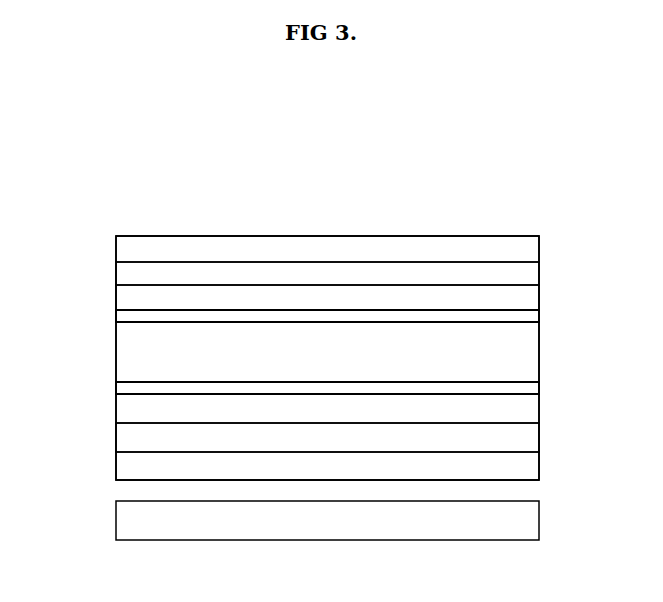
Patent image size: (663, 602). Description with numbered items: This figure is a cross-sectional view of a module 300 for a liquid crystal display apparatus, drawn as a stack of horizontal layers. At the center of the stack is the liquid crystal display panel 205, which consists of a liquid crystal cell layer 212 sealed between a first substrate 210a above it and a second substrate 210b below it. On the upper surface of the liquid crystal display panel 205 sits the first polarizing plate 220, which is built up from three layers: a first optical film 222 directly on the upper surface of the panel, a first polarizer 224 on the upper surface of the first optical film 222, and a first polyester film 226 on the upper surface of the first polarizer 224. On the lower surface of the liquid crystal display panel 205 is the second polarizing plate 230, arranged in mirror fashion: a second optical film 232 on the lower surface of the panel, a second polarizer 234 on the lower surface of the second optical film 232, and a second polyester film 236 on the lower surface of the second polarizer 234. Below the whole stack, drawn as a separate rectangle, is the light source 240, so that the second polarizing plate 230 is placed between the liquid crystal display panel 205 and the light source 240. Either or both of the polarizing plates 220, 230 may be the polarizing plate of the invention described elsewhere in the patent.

The module for a liquid crystal display apparatus 300 is at (527, 183).
The liquid crystal display panel 205 is at (545, 312).
The first substrate 210a is at (126, 318).
The second substrate 210b is at (126, 386).
The liquid crystal cell layer 212 is at (126, 354).
The first polarizing plate 220 is at (545, 236).
The first optical film 222 is at (126, 298).
The first polarizer 224 is at (126, 273).
The first polyester film 226 is at (126, 247).
The second polarizing plate 230 is at (545, 394).
The second optical film 232 is at (126, 403).
The second polarizer 234 is at (126, 438).
The second polyester film 236 is at (126, 468).
The light source 240 is at (126, 523).